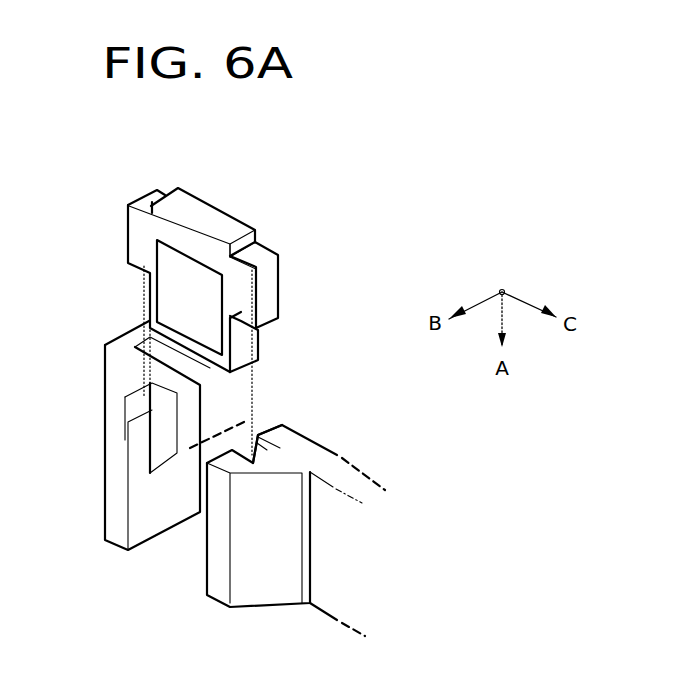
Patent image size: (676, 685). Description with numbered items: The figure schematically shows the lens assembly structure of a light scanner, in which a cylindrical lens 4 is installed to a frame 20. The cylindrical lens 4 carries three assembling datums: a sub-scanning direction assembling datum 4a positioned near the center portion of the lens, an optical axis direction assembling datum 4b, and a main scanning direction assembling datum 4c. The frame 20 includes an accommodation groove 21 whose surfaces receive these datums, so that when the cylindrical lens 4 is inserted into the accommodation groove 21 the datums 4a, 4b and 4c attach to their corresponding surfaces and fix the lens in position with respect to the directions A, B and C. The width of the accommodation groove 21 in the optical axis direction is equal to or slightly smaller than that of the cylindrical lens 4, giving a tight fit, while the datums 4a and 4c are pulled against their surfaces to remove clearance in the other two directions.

The cylindrical lens 4 is at (119, 208).
The sub-scanning direction assembling datum 4a is at (241, 326).
The optical axis direction assembling datum 4b is at (240, 283).
The main scanning direction assembling datum 4c is at (278, 295).
The frame 20 is at (307, 447).
The accommodation groove 21 is at (262, 437).